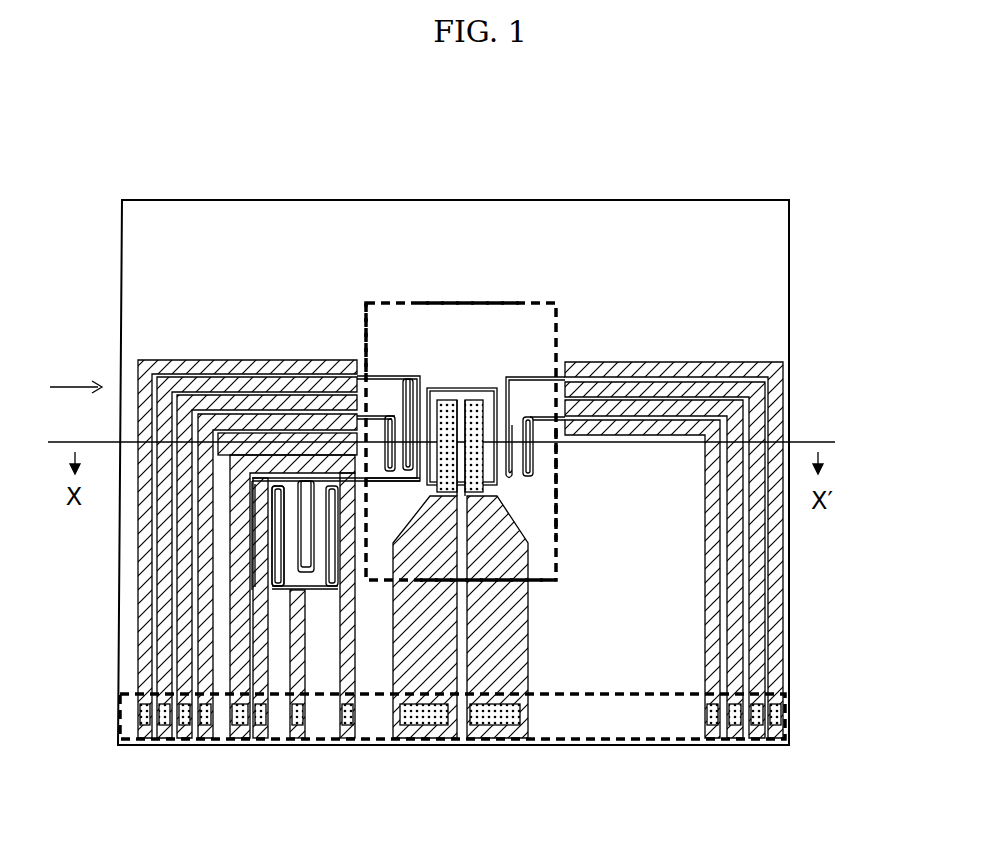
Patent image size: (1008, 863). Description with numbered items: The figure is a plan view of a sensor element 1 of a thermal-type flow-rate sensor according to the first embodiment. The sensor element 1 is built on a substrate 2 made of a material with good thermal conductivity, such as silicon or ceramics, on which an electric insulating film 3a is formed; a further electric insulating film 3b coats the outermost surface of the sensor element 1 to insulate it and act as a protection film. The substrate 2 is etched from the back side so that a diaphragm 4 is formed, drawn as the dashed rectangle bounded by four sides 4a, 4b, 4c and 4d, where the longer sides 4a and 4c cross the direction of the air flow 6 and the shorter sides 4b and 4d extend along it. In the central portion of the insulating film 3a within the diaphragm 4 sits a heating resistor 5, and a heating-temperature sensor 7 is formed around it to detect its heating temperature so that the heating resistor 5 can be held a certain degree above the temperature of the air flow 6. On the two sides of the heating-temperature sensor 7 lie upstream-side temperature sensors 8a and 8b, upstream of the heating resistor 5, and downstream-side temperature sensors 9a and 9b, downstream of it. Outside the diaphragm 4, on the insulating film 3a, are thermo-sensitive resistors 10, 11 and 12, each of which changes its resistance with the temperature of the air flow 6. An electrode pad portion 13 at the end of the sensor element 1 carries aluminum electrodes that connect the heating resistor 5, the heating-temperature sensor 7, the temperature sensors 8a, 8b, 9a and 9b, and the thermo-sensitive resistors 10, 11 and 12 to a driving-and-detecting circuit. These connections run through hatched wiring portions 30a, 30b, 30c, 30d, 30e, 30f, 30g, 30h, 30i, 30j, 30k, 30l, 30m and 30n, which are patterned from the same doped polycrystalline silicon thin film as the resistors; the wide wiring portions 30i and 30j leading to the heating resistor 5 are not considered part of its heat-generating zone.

The sensor element 1 is at (152, 188).
The substrate 2 is at (281, 199).
The electric insulating film 3a is at (337, 199).
The electric insulating film 3b is at (382, 199).
The diaphragm 4 is at (557, 520).
The side 4a is at (558, 486).
The side 4b is at (541, 583).
The side 4c is at (365, 340).
The side 4d is at (470, 302).
The heating resistor 5 is at (455, 392).
The air flow 6 is at (62, 372).
The heating-temperature sensor 7 is at (486, 400).
The upstream-side temperature sensor 8a is at (392, 405).
The upstream-side temperature sensor 8b is at (405, 400).
The downstream-side temperature sensor 9a is at (522, 405).
The downstream-side temperature sensor 9b is at (533, 415).
The thermo-sensitive resistor 10 is at (305, 480).
The thermo-sensitive resistor 11 is at (327, 500).
The thermo-sensitive resistor 12 is at (277, 525).
The electrode pad portion 13 is at (633, 693).
The wiring portion 30a is at (145, 546).
The wiring portion 30b is at (167, 576).
The wiring portion 30c is at (186, 606).
The wiring portion 30d is at (206, 638).
The wiring portion 30e is at (233, 655).
The wiring portion 30f is at (261, 655).
The wiring portion 30g is at (298, 655).
The wiring portion 30h is at (348, 655).
The wiring portion 30i is at (432, 652).
The wiring portion 30j is at (516, 648).
The wiring portion 30k is at (776, 548).
The wiring portion 30l is at (757, 586).
The wiring portion 30m is at (735, 612).
The wiring portion 30n is at (713, 638).